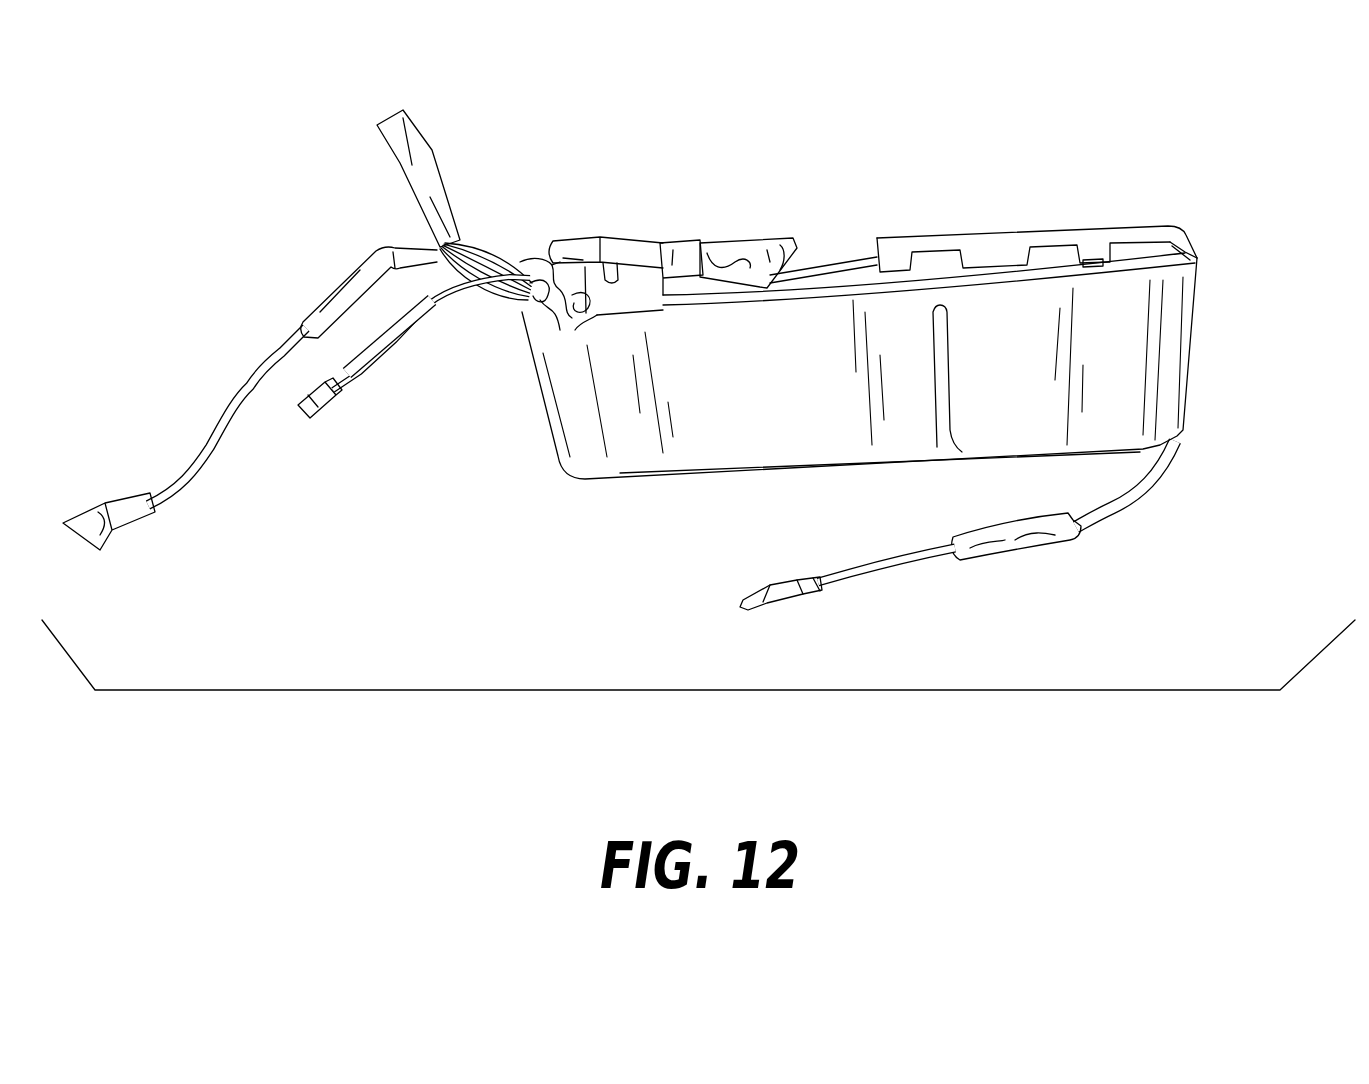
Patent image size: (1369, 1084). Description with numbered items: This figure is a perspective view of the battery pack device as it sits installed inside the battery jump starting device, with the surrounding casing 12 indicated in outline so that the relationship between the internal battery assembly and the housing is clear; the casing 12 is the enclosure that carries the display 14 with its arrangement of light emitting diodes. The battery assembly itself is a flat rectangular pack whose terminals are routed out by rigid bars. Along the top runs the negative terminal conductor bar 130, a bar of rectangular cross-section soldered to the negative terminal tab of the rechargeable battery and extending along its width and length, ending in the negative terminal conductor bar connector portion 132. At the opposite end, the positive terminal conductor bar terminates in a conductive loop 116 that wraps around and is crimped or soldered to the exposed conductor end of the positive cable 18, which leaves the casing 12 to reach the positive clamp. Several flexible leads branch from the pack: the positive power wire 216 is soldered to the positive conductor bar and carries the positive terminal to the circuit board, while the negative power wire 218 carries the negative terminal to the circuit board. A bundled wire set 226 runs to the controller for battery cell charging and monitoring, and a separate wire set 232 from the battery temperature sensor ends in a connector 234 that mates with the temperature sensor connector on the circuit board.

The casing 12 is at (693, 572).
The display 14 is at (593, 463).
The positive cable 18 is at (727, 250).
The conductive loop 116 is at (670, 240).
The negative terminal conductor bar 130 is at (1198, 262).
The negative terminal conductor bar connector portion 132 is at (995, 243).
The positive power wire 216 is at (258, 357).
The negative power wire 218 is at (1113, 510).
The wire set 226 is at (440, 200).
The wire set 232 is at (407, 327).
The connector 234 is at (317, 417).